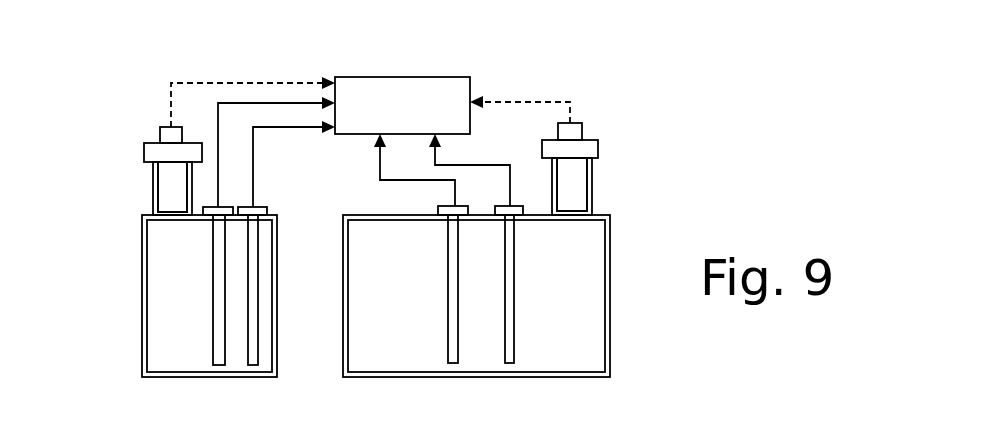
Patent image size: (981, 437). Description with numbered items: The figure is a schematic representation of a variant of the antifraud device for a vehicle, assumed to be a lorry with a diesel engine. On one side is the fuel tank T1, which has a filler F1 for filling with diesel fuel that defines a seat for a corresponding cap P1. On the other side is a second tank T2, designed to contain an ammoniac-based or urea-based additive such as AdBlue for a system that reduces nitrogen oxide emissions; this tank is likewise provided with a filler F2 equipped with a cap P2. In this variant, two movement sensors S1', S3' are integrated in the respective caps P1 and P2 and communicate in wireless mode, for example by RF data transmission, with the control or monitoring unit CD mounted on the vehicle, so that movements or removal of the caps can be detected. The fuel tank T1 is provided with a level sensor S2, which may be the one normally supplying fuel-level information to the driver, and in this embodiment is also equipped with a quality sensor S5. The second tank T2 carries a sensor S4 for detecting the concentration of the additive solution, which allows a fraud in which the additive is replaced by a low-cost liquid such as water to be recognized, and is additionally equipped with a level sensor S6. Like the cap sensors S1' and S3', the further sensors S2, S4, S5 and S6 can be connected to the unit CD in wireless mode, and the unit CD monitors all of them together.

The control unit CD is at (424, 120).
The cap P1 is at (612, 150).
The cap P2 is at (132, 148).
The filler F1 is at (592, 207).
The filler F2 is at (153, 203).
The fuel tank T1 is at (597, 362).
The second tank T2 is at (197, 363).
The movement sensor S1' is at (548, 89).
The movement sensor S3' is at (228, 87).
The level sensor S2 is at (448, 312).
The quality sensor S5 is at (514, 310).
The concentration sensor S4 is at (253, 287).
The level sensor S6 is at (218, 302).